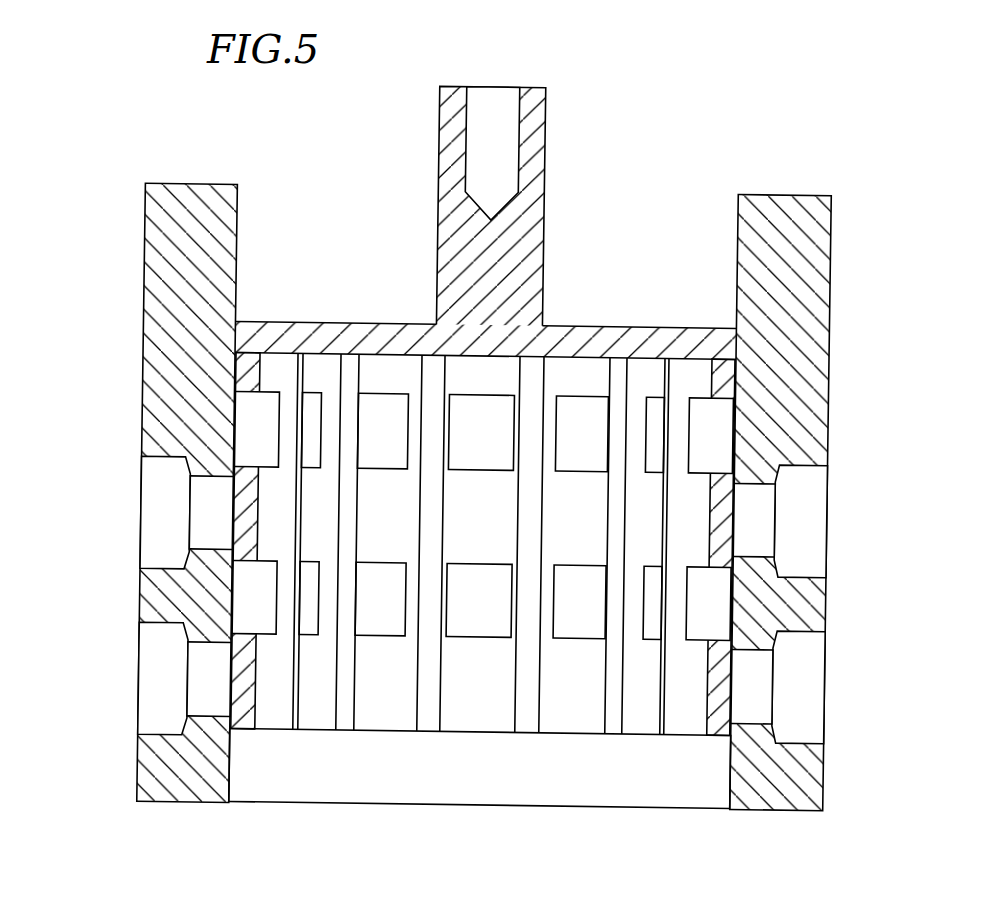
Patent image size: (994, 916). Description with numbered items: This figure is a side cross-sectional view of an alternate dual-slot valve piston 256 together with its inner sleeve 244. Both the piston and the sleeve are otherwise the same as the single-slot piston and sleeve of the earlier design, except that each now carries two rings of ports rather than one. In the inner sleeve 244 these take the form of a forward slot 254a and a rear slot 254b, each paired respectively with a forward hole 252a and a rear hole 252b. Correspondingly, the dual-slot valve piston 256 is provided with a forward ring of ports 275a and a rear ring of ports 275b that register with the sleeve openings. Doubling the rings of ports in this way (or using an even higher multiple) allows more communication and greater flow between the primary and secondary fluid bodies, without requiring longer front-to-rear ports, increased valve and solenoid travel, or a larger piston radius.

The inner sleeve 244 is at (797, 291).
The dual-slot valve piston 256 is at (580, 231).
The forward hole 252a is at (140, 695).
The rear hole 252b is at (138, 526).
The forward slot 254a is at (175, 662).
The rear slot 254b is at (177, 494).
The forward ring of ports 275a is at (479, 652).
The rear ring of ports 275b is at (497, 505).